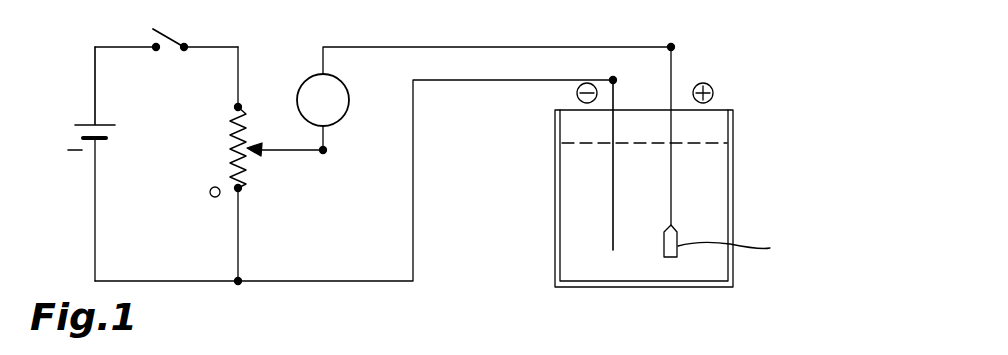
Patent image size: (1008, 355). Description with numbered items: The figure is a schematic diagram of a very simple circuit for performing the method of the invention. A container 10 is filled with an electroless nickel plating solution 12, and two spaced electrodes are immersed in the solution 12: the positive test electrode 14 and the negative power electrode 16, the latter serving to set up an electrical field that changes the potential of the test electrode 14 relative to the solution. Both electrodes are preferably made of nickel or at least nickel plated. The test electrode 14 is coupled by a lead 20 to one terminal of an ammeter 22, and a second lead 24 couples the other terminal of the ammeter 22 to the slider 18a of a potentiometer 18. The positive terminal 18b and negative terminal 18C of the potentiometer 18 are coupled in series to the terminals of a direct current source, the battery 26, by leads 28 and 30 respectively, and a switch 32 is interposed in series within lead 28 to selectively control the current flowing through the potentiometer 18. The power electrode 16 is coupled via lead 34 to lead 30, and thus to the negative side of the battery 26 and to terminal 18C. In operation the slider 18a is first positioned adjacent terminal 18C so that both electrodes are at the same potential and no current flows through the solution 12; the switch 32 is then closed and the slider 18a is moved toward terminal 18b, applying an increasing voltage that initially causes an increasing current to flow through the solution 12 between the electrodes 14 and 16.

The container 10 is at (735, 122).
The electroless nickel plating solution 12 is at (715, 208).
The test electrode 14 is at (671, 197).
The power electrode 16 is at (613, 203).
The potentiometer 18 is at (222, 148).
The slider 18a is at (302, 150).
The positive terminal 18b is at (240, 105).
The negative terminal 18C is at (239, 190).
The lead 20 is at (424, 47).
The ammeter 22 is at (345, 88).
The second lead 24 is at (326, 141).
The battery 26 is at (91, 148).
The lead 28 is at (107, 47).
The lead 30 is at (95, 244).
The switch 32 is at (168, 34).
The lead 34 is at (318, 281).